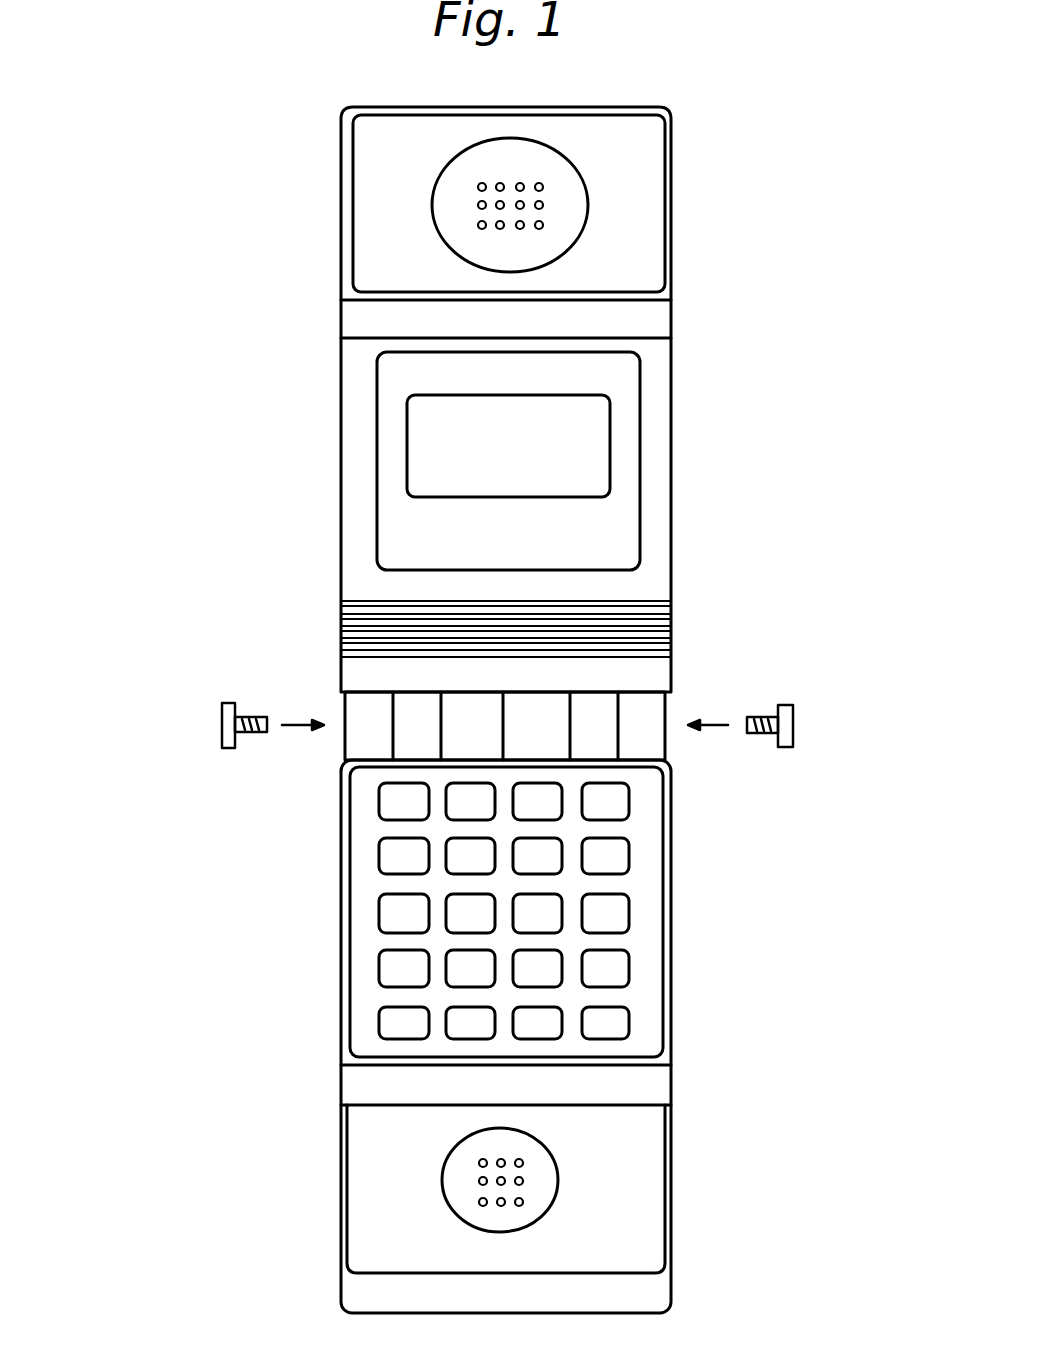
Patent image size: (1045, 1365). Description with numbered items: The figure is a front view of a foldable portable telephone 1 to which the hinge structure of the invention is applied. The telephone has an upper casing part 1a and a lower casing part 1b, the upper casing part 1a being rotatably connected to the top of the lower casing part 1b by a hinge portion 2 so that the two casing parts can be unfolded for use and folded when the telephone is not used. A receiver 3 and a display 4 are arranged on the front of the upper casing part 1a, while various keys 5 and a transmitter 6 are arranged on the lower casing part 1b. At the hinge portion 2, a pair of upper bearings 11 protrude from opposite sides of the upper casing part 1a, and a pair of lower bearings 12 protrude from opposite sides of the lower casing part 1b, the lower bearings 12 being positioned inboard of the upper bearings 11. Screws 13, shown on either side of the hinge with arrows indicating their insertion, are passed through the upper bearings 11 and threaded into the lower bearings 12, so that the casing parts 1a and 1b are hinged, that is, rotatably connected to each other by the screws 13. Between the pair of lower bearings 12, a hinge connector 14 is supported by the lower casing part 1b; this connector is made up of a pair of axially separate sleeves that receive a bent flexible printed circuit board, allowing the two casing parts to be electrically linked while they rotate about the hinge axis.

The portable telephone 1 is at (502, 710).
The upper casing part 1a is at (342, 318).
The lower casing part 1b is at (342, 1038).
The hinge portion 2 is at (510, 689).
The receiver 3 is at (570, 218).
The display 4 is at (593, 483).
The keys 5 is at (623, 910).
The transmitter 6 is at (548, 1180).
The upper bearings 11 is at (362, 728).
The lower bearings 12 is at (420, 732).
The screws 13 is at (222, 720).
The hinge connector 14 is at (532, 715).